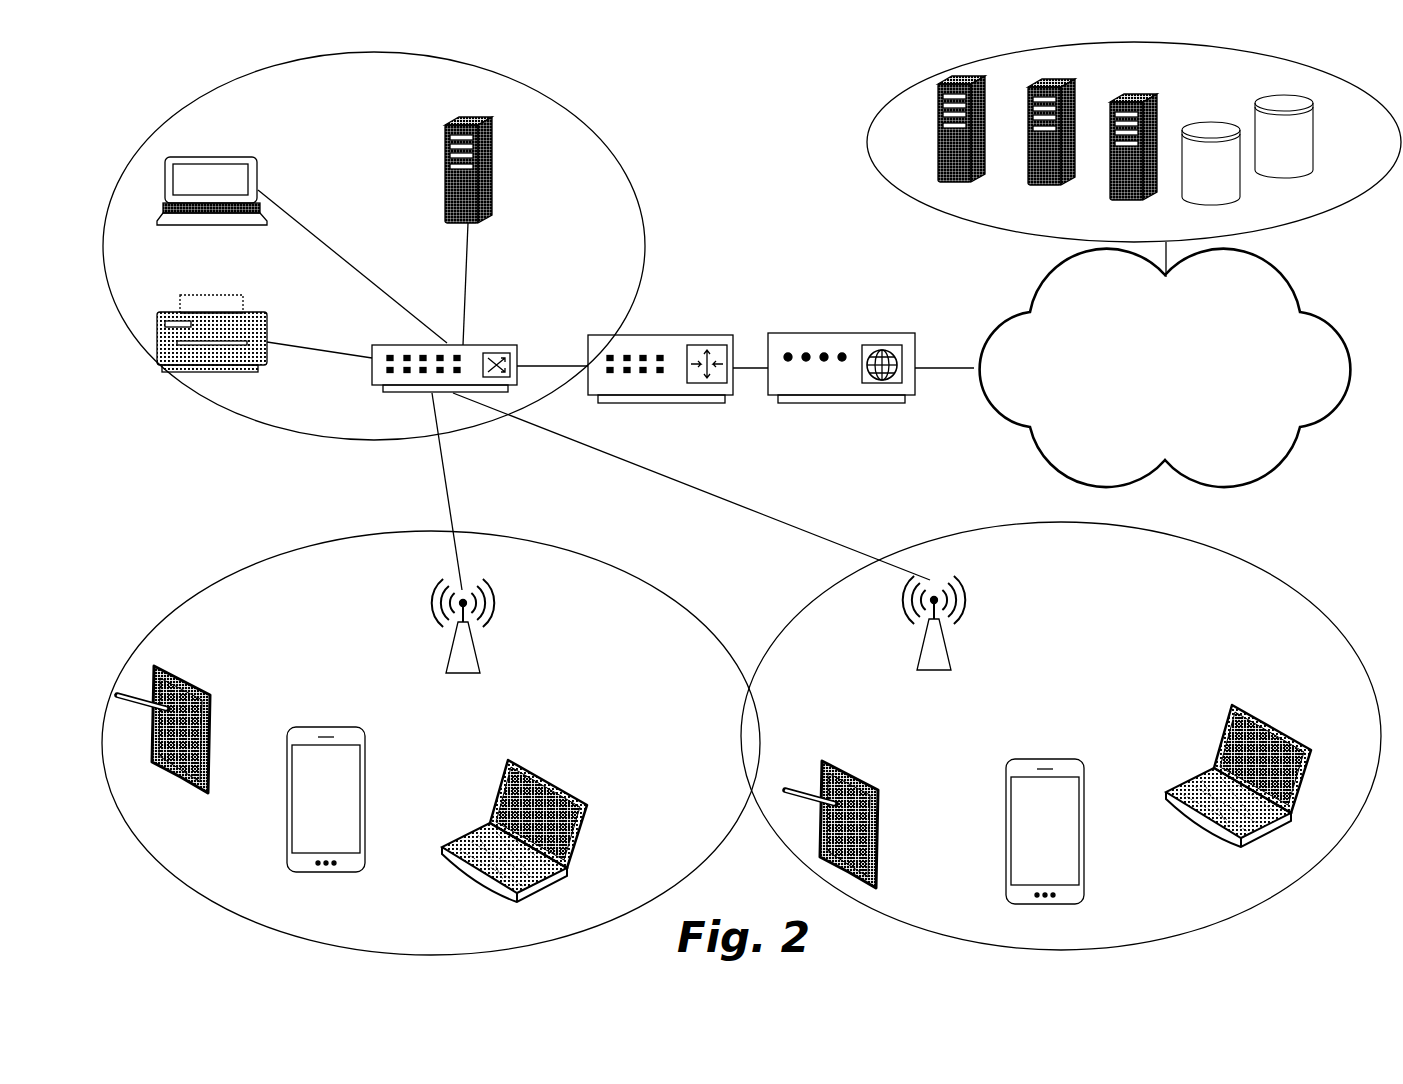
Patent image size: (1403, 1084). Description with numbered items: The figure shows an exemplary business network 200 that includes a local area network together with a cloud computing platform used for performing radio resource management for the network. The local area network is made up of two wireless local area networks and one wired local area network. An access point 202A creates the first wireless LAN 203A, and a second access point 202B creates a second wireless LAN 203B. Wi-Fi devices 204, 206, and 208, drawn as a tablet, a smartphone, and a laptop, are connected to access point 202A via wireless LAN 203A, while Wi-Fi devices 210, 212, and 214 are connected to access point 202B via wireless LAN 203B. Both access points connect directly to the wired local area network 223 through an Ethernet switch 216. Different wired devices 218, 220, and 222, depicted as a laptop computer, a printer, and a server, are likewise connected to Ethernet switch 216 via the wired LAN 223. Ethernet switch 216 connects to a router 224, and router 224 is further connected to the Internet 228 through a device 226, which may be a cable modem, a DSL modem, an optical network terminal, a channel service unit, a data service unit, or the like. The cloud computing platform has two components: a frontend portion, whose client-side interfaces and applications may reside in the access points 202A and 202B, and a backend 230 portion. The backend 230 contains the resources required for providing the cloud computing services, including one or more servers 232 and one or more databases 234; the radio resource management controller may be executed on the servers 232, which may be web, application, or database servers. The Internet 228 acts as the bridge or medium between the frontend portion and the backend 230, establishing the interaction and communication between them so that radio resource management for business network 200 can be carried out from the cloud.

The business network 200 is at (799, 98).
The access point 202A is at (480, 648).
The access point 202B is at (957, 645).
The first wireless LAN 203A is at (642, 585).
The second wireless LAN 203B is at (1263, 575).
The Wi-Fi device 204 is at (206, 790).
The Wi-Fi device 206 is at (357, 870).
The Wi-Fi device 208 is at (580, 845).
The Wi-Fi device 210 is at (884, 861).
The Wi-Fi device 212 is at (1088, 861).
The Wi-Fi device 214 is at (1282, 720).
The Ethernet switch 216 is at (387, 377).
The device 218 is at (228, 152).
The device 220 is at (255, 315).
The device 222 is at (488, 150).
The wired local area network 223 is at (602, 139).
The router 224 is at (680, 333).
The device 226 is at (848, 333).
The Internet 228 is at (1345, 323).
The backend 230 is at (876, 165).
The servers 232 is at (985, 112).
The databases 234 is at (1222, 121).